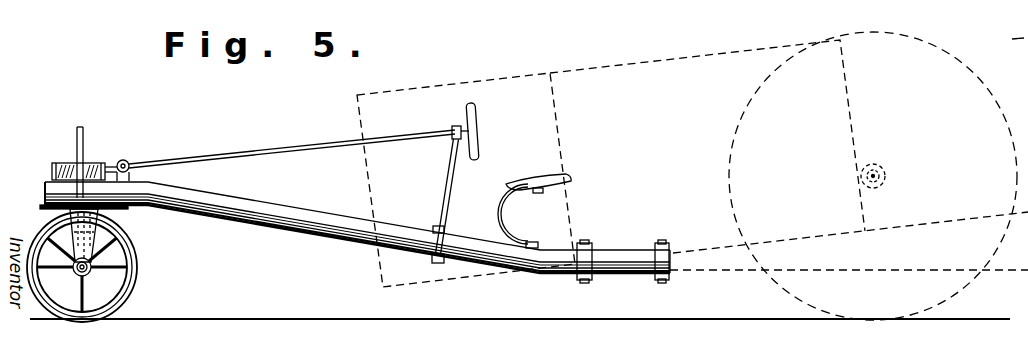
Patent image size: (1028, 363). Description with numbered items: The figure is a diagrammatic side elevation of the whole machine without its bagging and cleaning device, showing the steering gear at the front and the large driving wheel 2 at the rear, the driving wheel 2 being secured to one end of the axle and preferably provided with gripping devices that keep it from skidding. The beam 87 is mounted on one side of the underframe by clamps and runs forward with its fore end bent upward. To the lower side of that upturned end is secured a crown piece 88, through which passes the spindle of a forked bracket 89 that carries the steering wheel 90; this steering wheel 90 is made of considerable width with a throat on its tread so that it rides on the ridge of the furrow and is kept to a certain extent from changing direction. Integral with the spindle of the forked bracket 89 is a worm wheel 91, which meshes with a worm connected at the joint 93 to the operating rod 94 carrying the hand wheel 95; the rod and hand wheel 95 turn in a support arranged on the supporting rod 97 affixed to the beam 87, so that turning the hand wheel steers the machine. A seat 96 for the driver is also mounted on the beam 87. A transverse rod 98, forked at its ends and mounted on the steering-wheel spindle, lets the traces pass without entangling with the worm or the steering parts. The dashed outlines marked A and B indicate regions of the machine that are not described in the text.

The driving wheel 2 is at (931, 45).
The beam 87 is at (290, 207).
The crown piece 88 is at (50, 209).
The forked bracket 89 is at (90, 240).
The steering wheel 90 is at (143, 270).
The worm wheel 91 is at (66, 163).
The joint 93 is at (127, 160).
The operating rod 94 is at (262, 156).
The hand wheel 95 is at (482, 136).
The seat 96 is at (535, 175).
The supporting rod 97 is at (436, 226).
The transverse rod 98 is at (83, 130).
The space A is at (437, 84).
The space B is at (620, 68).